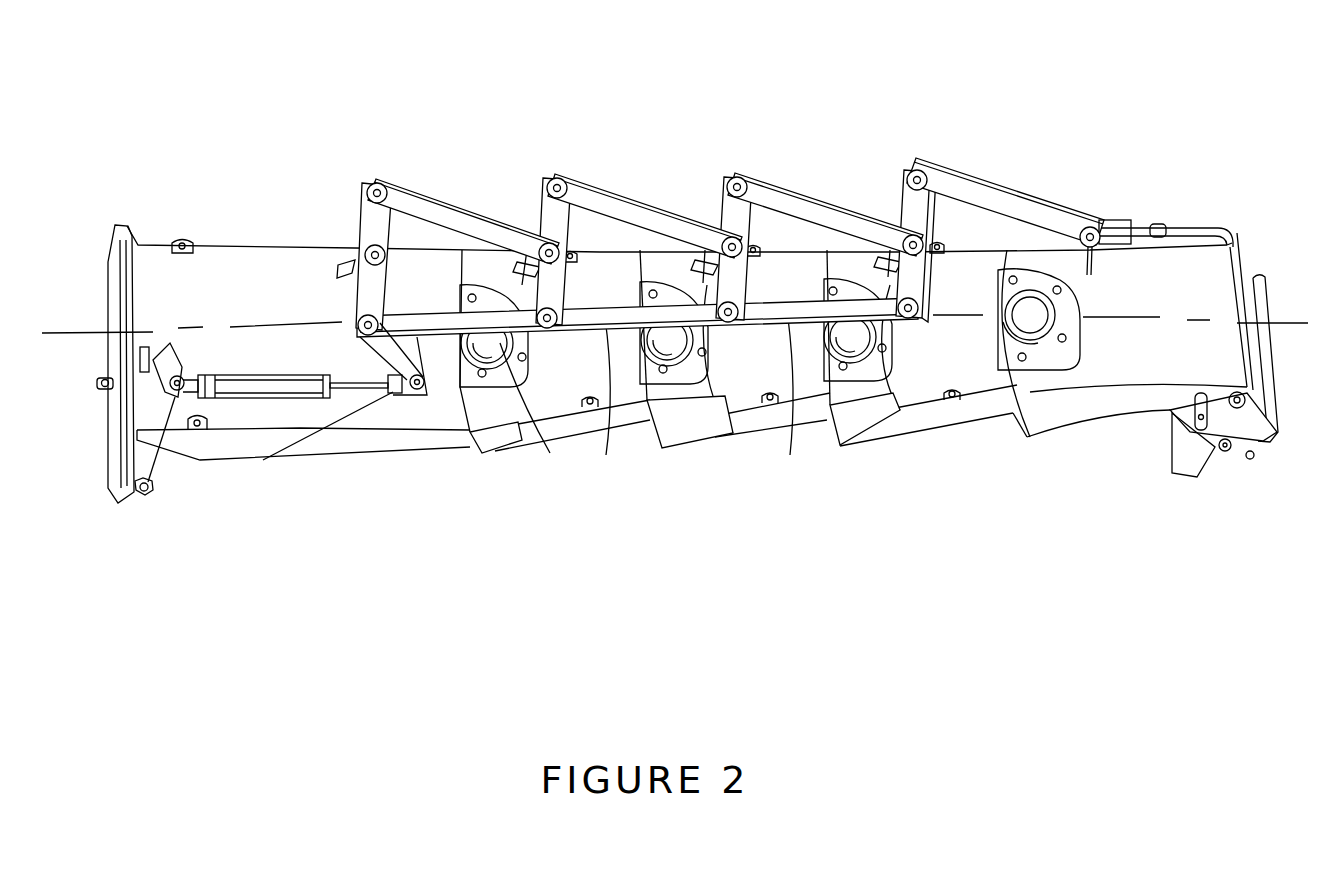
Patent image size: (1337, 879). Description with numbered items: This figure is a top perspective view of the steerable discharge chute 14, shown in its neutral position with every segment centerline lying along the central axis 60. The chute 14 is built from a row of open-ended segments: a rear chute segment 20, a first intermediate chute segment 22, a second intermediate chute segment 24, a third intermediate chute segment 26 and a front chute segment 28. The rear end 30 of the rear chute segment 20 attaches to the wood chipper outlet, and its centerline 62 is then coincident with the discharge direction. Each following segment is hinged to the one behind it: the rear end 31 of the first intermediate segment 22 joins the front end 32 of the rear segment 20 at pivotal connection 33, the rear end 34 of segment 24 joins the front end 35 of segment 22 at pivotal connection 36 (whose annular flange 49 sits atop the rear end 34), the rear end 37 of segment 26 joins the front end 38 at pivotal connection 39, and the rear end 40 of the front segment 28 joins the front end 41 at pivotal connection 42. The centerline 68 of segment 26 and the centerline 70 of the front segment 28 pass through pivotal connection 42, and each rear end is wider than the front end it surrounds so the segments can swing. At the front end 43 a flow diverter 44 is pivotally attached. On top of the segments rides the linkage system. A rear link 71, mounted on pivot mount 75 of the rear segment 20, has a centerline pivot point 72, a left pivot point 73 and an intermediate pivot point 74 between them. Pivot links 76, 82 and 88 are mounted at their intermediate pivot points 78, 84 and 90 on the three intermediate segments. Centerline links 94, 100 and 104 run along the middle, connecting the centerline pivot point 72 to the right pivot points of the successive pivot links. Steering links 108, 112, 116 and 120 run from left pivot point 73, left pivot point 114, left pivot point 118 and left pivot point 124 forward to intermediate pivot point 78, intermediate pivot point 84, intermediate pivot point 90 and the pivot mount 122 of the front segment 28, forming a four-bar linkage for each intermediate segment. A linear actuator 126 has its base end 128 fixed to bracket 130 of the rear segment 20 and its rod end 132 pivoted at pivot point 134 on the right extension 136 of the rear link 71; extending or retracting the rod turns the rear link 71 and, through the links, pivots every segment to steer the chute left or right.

The discharge chute 14 is at (890, 102).
The rear chute segment 20 is at (166, 285).
The first intermediate chute segment 22 is at (563, 380).
The second intermediate chute segment 24 is at (738, 374).
The third intermediate chute segment 26 is at (911, 382).
The front chute segment 28 is at (1133, 374).
The rear end of rear chute segment 30 is at (123, 207).
The rear end of first intermediate chute segment 31 is at (490, 458).
The front end of rear chute segment 32 is at (470, 454).
The pivotal connection 33 is at (502, 345).
The rear end of second intermediate chute segment 34 is at (672, 456).
The front end of first intermediate chute segment 35 is at (650, 449).
The pivotal connection 36 is at (703, 373).
The rear end of third intermediate chute segment 37 is at (852, 452).
The front end of second intermediate chute segment 38 is at (829, 450).
The pivotal connection 39 is at (872, 352).
The rear end of front chute segment 40 is at (1041, 449).
The front end of third intermediate chute segment 41 is at (1015, 446).
The pivotal connection 42 is at (1033, 317).
The front end of front chute segment 43 is at (1216, 207).
The flow diverter 44 is at (1190, 466).
The annular flange 49 is at (658, 248).
The central axis 60 is at (77, 338).
The centerline of rear chute segment 62 is at (258, 320).
The centerline of third intermediate chute segment 68 is at (948, 311).
The centerline of front chute segment 70 is at (1189, 318).
The rear link 71 is at (371, 227).
The centerline pivot point 72 is at (353, 338).
The left pivot point 73 is at (371, 183).
The intermediate pivot point 74 is at (386, 243).
The pivot mount 75 is at (355, 251).
The pivot link 76 is at (547, 213).
The intermediate pivot point 78 is at (530, 247).
The pivot link 82 is at (717, 207).
The intermediate pivot point 84 is at (717, 243).
The pivot link 88 is at (913, 207).
The intermediate pivot point 90 is at (902, 241).
The centerline link 94 is at (425, 341).
The centerline link 100 is at (605, 324).
The centerline link 104 is at (790, 325).
The steering link 108 is at (422, 212).
The steering link 112 is at (597, 205).
The left pivot point 114 is at (554, 175).
The steering link 116 is at (775, 203).
The left pivot point 118 is at (738, 170).
The steering link 120 is at (1007, 207).
The pivot mount 122 is at (1101, 258).
The left pivot point 124 is at (921, 160).
The linear actuator 126 is at (237, 384).
The base end 128 is at (138, 492).
The bracket 130 is at (165, 360).
The rod end 132 is at (300, 460).
The pivot point 134 is at (410, 393).
The right extension 136 is at (396, 384).